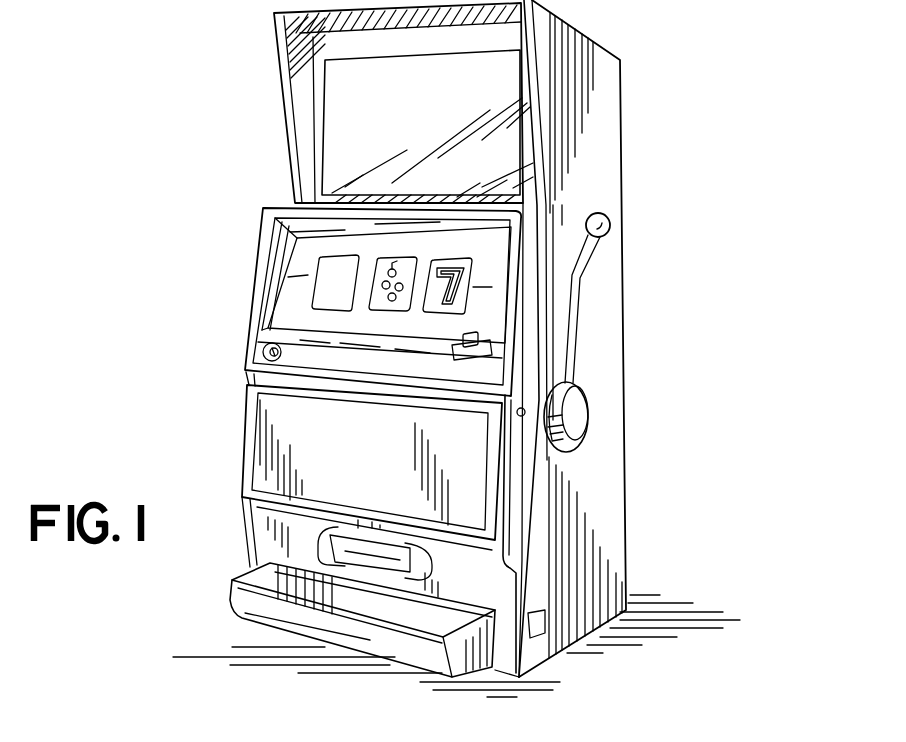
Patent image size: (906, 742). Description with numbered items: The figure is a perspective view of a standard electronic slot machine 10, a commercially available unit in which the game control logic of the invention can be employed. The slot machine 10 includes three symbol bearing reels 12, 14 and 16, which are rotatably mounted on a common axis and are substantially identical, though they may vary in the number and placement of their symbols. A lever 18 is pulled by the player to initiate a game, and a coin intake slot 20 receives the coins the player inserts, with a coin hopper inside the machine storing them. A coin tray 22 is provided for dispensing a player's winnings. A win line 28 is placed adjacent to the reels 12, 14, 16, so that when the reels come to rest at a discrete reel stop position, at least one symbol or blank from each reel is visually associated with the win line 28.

The slot machine 10 is at (708, 170).
The symbol bearing reel 12 is at (325, 297).
The symbol bearing reel 14 is at (395, 268).
The symbol bearing reel 16 is at (458, 302).
The lever 18 is at (603, 262).
The coin intake slot 20 is at (488, 352).
The coin tray 22 is at (268, 566).
The win line 28 is at (312, 278).